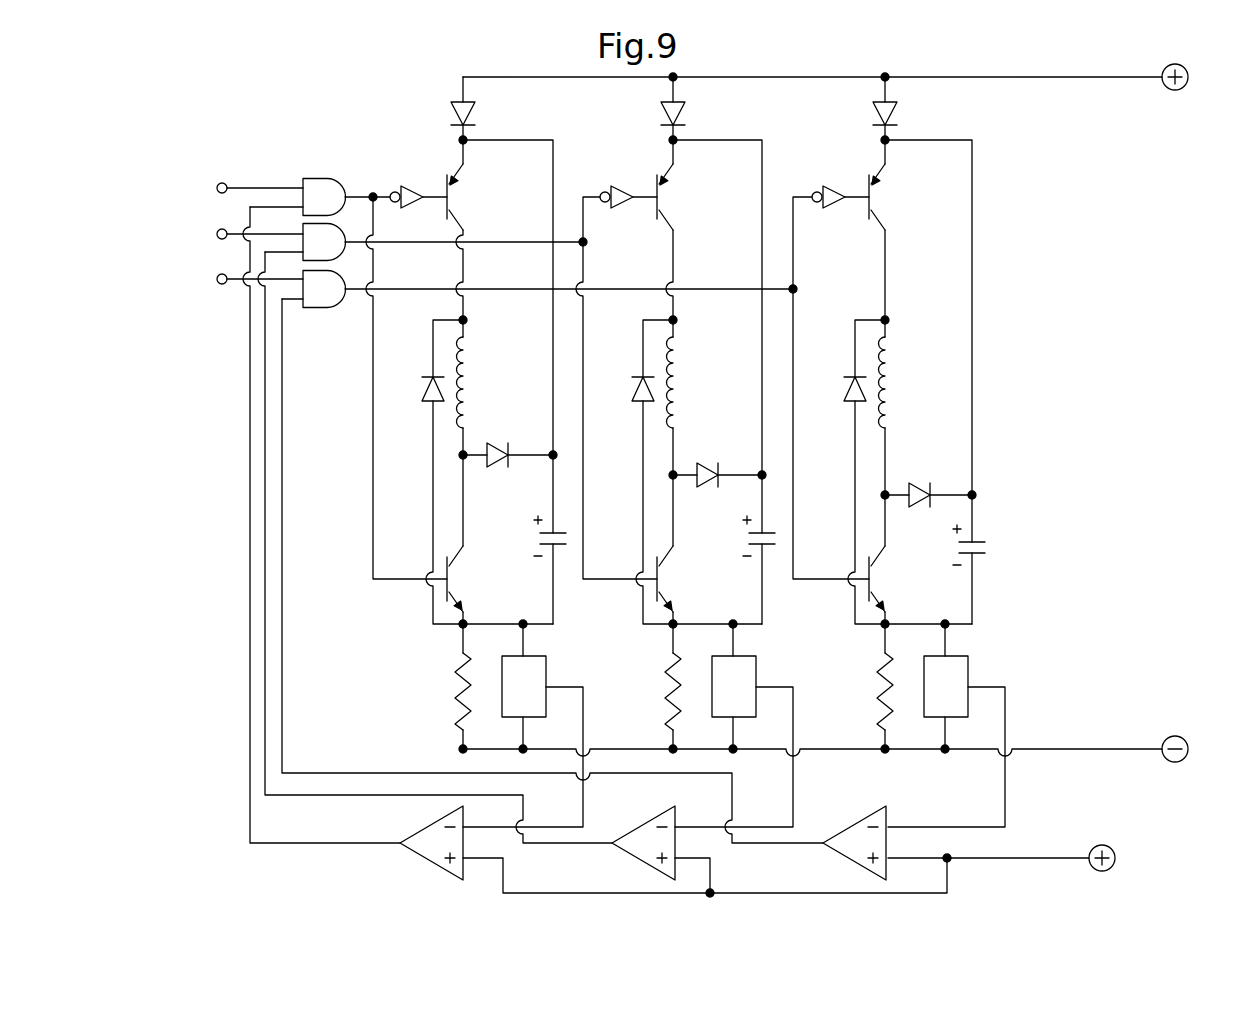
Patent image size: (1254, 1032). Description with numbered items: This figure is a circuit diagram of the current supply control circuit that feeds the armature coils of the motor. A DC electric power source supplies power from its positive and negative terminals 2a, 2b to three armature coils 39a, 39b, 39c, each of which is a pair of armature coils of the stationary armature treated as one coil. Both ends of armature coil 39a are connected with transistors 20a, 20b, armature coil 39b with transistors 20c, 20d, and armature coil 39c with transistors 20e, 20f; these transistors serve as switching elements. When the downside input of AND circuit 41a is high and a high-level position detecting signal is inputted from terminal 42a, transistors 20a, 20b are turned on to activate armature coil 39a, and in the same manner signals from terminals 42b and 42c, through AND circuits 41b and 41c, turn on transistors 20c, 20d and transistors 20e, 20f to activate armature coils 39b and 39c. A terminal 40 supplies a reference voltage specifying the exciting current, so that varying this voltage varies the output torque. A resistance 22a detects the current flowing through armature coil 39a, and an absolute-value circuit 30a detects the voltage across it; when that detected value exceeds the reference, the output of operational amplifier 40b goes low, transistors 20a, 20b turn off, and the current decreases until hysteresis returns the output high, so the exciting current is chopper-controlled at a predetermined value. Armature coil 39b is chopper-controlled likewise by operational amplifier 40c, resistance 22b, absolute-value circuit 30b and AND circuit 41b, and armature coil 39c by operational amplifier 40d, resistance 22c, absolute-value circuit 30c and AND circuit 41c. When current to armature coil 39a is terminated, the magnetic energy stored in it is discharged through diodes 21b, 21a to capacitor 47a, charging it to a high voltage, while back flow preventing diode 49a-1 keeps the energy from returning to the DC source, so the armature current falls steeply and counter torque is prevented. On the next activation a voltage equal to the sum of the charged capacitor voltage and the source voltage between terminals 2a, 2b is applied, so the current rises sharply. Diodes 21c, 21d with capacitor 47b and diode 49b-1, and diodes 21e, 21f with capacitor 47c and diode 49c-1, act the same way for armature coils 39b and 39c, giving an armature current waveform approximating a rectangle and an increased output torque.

The positive terminal 2a is at (1180, 89).
The negative terminal 2b is at (1178, 762).
The reference voltage terminal 40 is at (1114, 867).
The operational amplifier 40b is at (414, 852).
The operational amplifier 40c is at (625, 852).
The operational amplifier 40d is at (827, 852).
The AND circuit 41a is at (313, 178).
The AND circuit 41b is at (342, 250).
The AND circuit 41c is at (318, 309).
The terminal 42a is at (216, 188).
The terminal 42b is at (216, 234).
The terminal 42c is at (216, 280).
The transistor 20a is at (450, 178).
The transistor 20b is at (463, 582).
The transistor 20c is at (660, 178).
The transistor 20d is at (673, 582).
The transistor 20e is at (872, 178).
The transistor 20f is at (885, 582).
The diode 21a is at (423, 390).
The diode 21b is at (497, 444).
The diode 21c is at (633, 390).
The diode 21d is at (707, 464).
The diode 21e is at (845, 390).
The diode 21f is at (919, 484).
The resistance 22a is at (453, 678).
The resistance 22b is at (663, 678).
The resistance 22c is at (875, 678).
The absolute-value circuit 30a is at (547, 672).
The absolute-value circuit 30b is at (757, 672).
The absolute-value circuit 30c is at (969, 672).
The armature coil 39a is at (471, 372).
The armature coil 39b is at (681, 372).
The armature coil 39c is at (893, 372).
The capacitor 47a is at (541, 537).
The capacitor 47b is at (750, 537).
The capacitor 47c is at (960, 546).
The back flow preventing diode 49a-1 is at (477, 118).
The back flow preventing diode 49b-1 is at (687, 118).
The back flow preventing diode 49c-1 is at (899, 118).